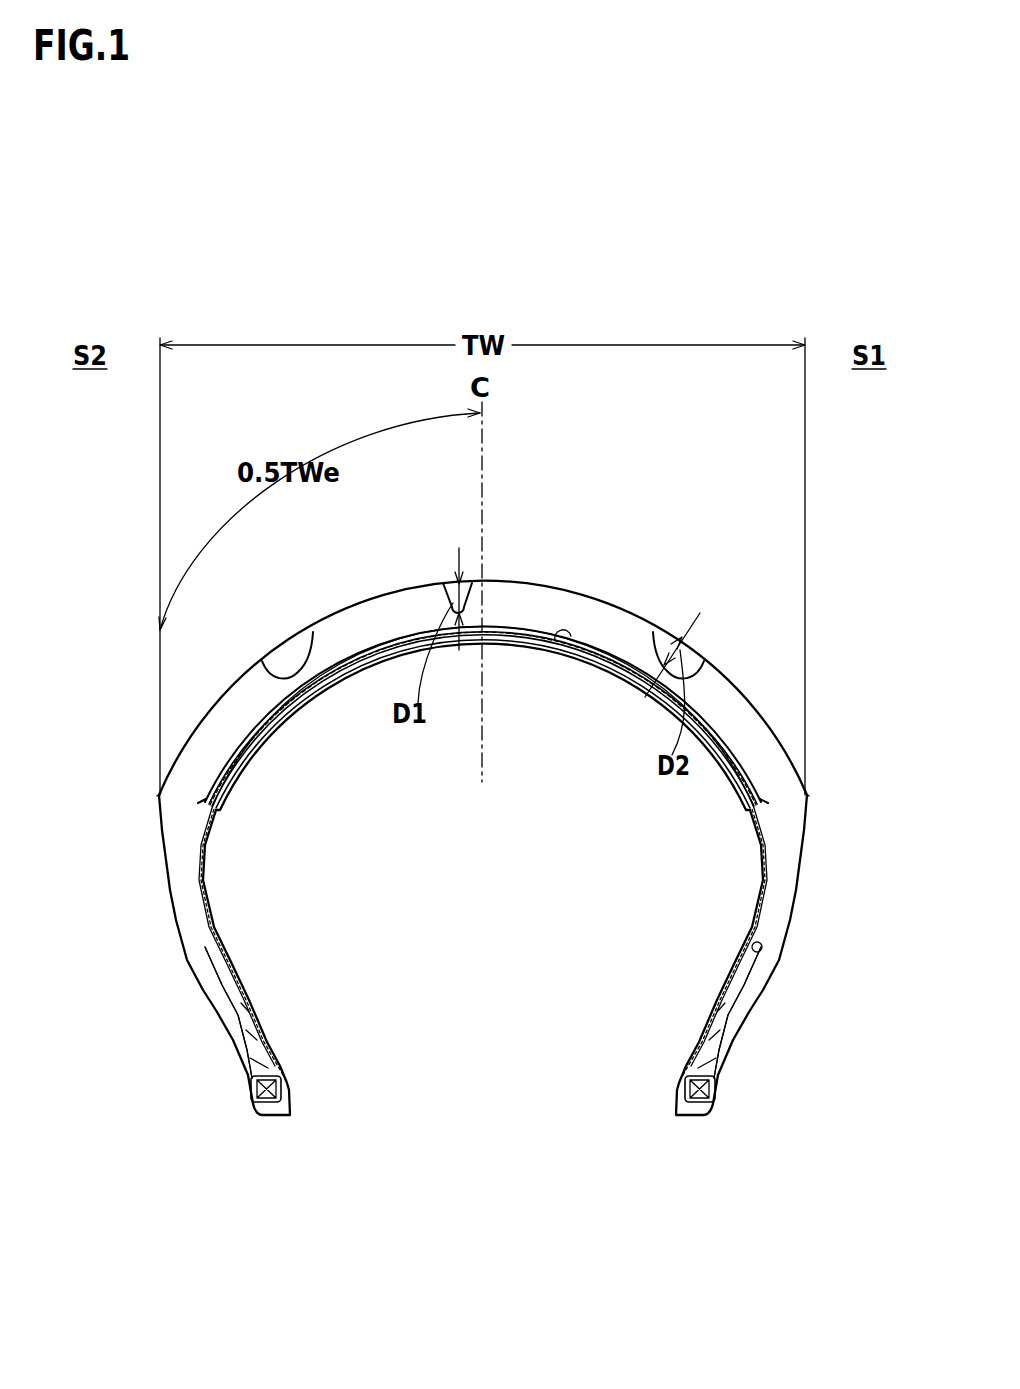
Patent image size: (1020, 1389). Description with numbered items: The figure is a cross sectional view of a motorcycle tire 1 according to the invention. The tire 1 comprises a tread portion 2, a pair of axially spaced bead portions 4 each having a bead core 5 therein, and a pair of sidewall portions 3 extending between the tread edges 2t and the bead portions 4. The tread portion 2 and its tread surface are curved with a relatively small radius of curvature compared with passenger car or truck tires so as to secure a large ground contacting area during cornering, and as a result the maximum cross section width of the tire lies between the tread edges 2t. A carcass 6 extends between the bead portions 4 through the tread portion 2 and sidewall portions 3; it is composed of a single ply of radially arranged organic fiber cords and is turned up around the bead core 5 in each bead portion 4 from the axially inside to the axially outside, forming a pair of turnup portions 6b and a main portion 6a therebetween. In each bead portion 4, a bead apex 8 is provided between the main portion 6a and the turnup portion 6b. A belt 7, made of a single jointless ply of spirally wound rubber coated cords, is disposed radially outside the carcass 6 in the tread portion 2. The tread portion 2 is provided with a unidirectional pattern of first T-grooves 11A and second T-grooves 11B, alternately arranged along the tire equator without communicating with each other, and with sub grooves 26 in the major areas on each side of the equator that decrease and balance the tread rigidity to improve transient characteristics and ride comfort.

The motorcycle tire 1 is at (767, 648).
The tread portion 2 is at (545, 583).
The tread edges 2t is at (158, 798).
The sidewall portions 3 is at (159, 906).
The bead portions 4 is at (287, 1082).
The bead core 5 is at (267, 1100).
The carcass 6 is at (484, 852).
The main portion 6a is at (770, 887).
The turnup portions 6b is at (753, 945).
The belt 7 is at (571, 652).
The bead apex 8 is at (262, 1055).
The first T-grooves 11A is at (452, 598).
The second T-grooves 11B is at (286, 668).
The sub grooves 26 is at (662, 648).